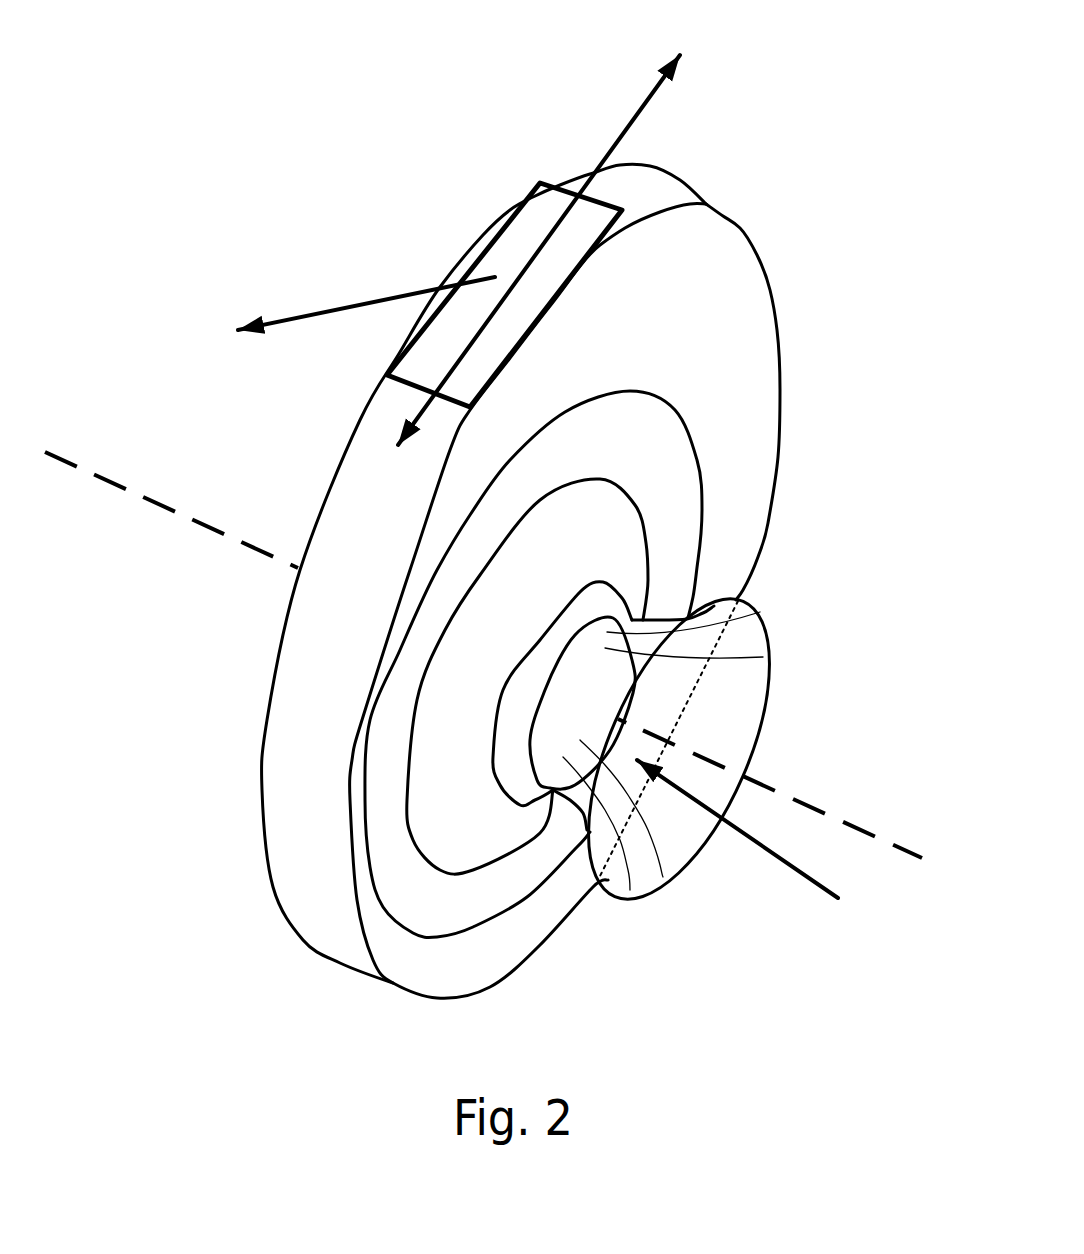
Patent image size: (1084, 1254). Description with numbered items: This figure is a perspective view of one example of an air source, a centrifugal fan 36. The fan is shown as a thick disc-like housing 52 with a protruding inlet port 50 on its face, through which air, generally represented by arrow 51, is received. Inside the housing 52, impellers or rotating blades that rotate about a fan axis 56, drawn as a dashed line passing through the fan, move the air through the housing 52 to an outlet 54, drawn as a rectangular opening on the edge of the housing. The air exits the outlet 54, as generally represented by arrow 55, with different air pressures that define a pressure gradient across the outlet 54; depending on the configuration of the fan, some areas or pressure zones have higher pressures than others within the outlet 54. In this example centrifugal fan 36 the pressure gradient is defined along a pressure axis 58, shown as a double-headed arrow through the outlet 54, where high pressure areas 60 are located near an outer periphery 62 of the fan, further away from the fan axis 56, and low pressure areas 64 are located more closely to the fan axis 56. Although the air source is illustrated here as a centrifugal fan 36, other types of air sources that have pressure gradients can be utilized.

The centrifugal fan 36 is at (818, 490).
The inlet port 50 is at (663, 717).
The arrow representing air 51 is at (793, 870).
The housing 52 is at (350, 788).
The outlet 54 is at (486, 248).
The arrow representing exiting air 55 is at (340, 303).
The fan axis 56 is at (858, 823).
The pressure axis 58 is at (637, 112).
The high pressure areas 60 is at (575, 250).
The outer periphery 62 is at (763, 261).
The low pressure areas 64 is at (530, 337).